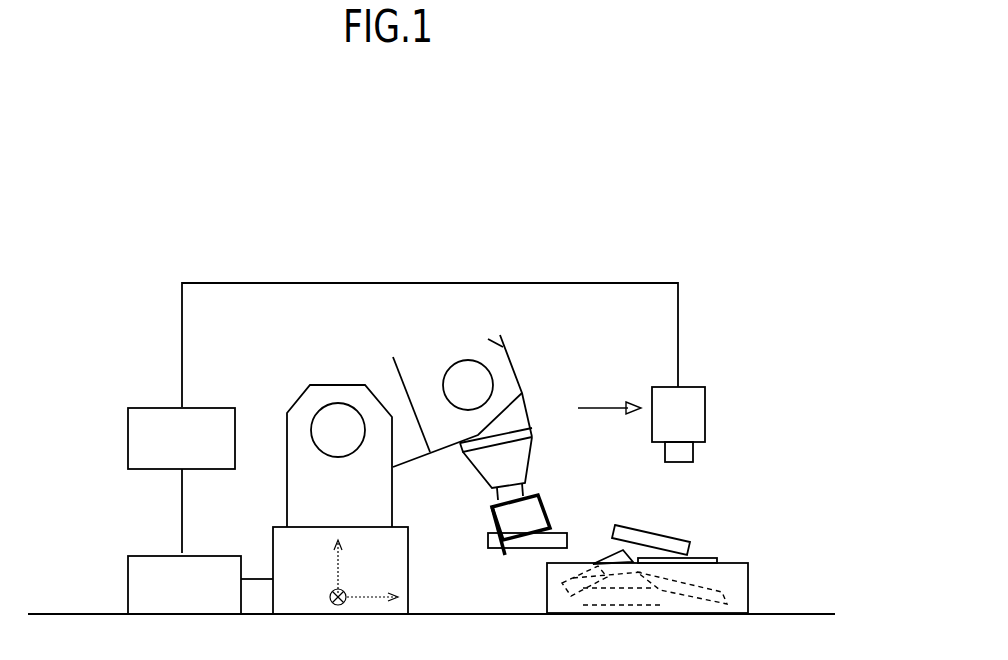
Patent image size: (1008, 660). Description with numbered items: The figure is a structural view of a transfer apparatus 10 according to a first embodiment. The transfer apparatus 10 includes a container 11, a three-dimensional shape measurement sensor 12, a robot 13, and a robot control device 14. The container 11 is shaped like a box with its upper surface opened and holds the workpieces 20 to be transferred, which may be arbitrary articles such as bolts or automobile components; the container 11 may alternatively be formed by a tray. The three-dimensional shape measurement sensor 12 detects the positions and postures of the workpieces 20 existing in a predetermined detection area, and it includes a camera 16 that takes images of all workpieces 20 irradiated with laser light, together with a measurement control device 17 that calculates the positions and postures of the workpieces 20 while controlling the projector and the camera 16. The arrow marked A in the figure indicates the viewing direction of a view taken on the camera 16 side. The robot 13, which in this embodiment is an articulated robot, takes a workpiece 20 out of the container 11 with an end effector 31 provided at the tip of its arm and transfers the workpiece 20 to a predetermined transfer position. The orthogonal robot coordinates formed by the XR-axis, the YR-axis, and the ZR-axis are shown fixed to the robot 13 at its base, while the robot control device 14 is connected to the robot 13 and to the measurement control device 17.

The transfer apparatus 10 is at (236, 214).
The container 11 is at (735, 580).
The three-dimensional shape measurement sensor 12 is at (679, 354).
The robot 13 is at (444, 455).
The robot control device 14 is at (148, 578).
The camera 16 is at (693, 415).
The measurement control device 17 is at (145, 427).
The workpiece 20 is at (653, 533).
The end effector 31 is at (543, 506).